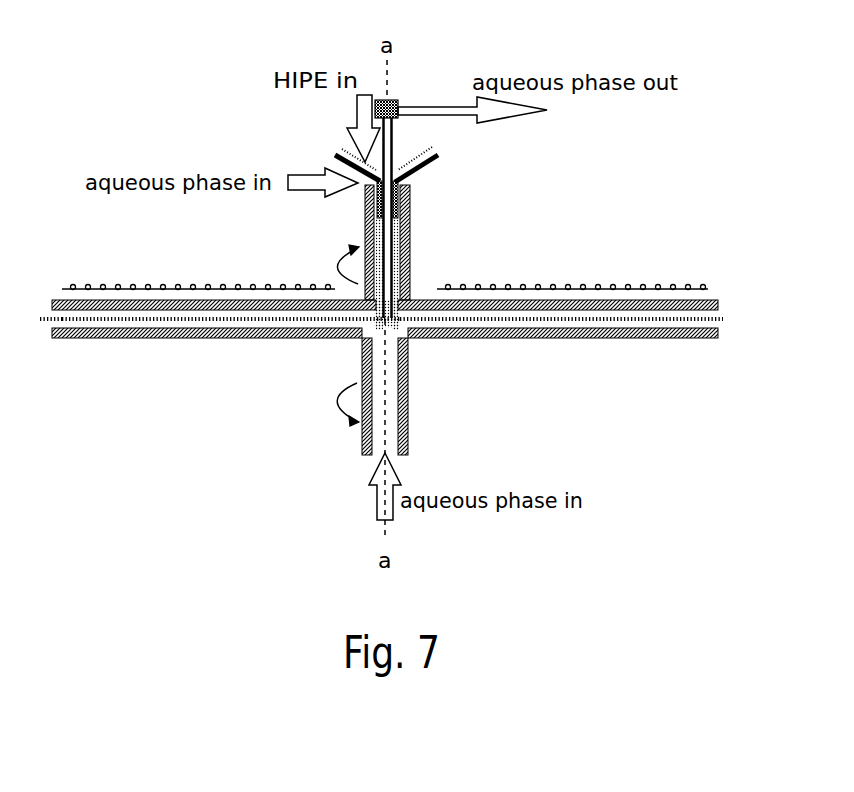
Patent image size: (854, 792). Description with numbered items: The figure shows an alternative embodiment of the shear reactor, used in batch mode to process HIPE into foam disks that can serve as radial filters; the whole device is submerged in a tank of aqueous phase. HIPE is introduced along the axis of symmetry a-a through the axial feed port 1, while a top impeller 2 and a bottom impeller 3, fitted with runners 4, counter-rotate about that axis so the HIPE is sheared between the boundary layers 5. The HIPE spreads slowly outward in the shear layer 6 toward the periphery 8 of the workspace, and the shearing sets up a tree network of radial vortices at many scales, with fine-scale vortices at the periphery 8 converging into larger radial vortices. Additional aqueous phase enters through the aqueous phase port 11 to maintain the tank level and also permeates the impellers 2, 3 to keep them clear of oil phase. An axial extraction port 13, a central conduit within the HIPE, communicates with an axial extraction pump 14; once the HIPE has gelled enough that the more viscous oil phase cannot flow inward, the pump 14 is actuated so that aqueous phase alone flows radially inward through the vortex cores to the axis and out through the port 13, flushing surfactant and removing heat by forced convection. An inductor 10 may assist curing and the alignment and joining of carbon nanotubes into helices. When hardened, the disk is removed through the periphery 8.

The axial feed port for HIPE 1 is at (340, 152).
The top impeller 2 is at (215, 300).
The bottom impeller 3 is at (220, 338).
The runners on the impellers 4 is at (283, 323).
The boundary layer 5 is at (487, 308).
The shear layer 6 is at (590, 320).
The periphery of the workspace 8 is at (55, 322).
The inductor 10 is at (305, 286).
The aqueous phase port 11 is at (388, 457).
The axial extraction port 13 is at (393, 135).
The axial extraction pump 14 is at (396, 100).